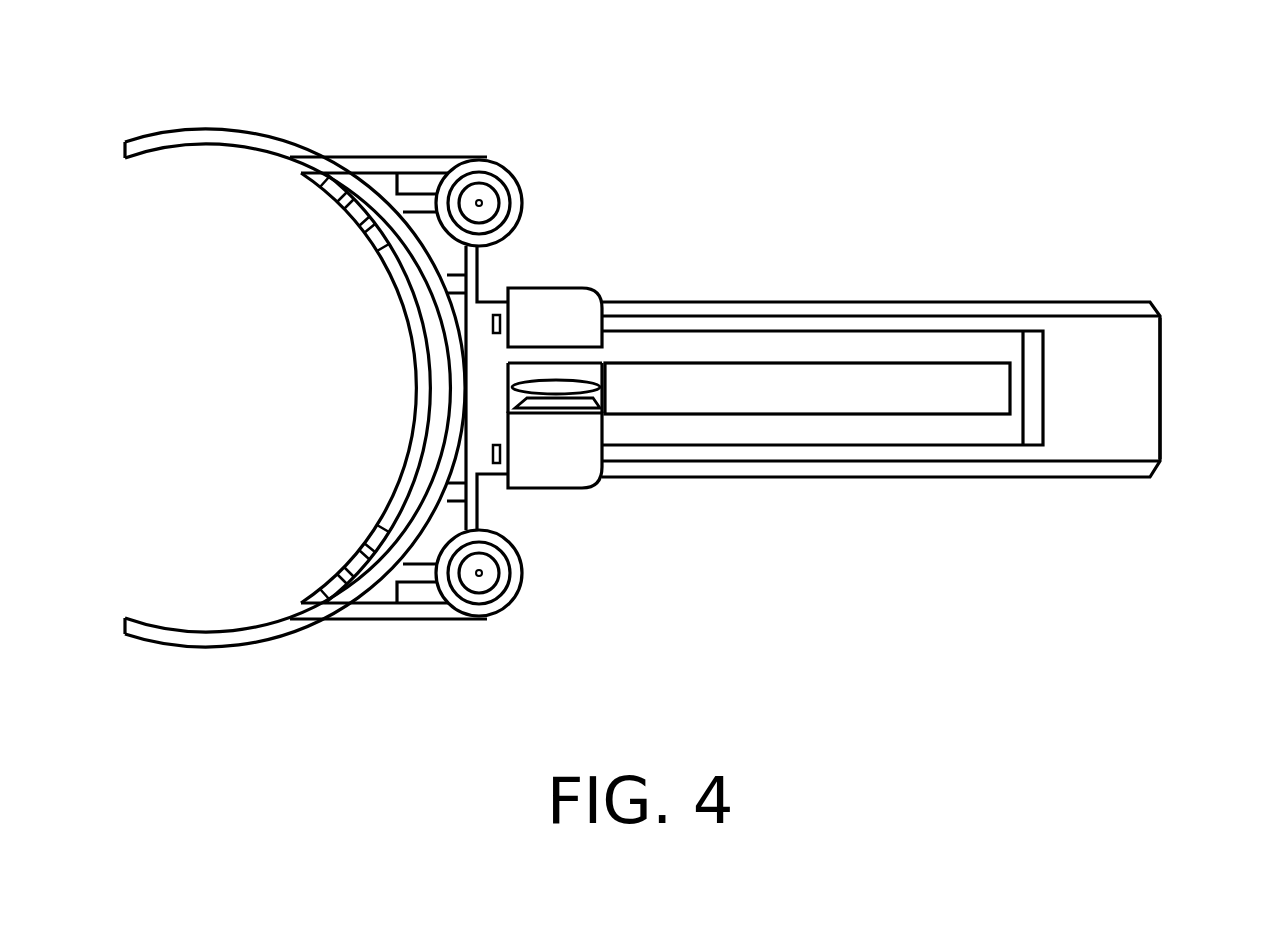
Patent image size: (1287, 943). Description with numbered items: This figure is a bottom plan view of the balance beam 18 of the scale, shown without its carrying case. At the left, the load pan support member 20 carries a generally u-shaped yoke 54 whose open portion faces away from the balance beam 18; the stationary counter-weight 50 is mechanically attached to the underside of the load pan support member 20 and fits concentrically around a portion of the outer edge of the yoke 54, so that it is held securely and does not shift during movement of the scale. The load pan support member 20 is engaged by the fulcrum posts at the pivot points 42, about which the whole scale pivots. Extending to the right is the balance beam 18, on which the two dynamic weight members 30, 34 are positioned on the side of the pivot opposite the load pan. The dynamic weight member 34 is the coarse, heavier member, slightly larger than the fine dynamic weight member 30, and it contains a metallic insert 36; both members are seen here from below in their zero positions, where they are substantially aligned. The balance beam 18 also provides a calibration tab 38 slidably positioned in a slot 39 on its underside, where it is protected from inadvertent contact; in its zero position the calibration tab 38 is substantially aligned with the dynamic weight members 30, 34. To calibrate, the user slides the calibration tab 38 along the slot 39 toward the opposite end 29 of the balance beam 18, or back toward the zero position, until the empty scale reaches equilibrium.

The balance beam 18 is at (1088, 347).
The load pan support member 20 is at (345, 157).
The opposite end 29 is at (1162, 393).
The dynamic weight member 30 is at (556, 288).
The dynamic weight member 34 is at (568, 488).
The metallic insert 36 is at (600, 407).
The calibration tab 38 is at (603, 386).
The slot 39 is at (805, 375).
The pivot points 42 is at (487, 200).
The counter-weight 50 is at (433, 433).
The yoke 54 is at (222, 129).